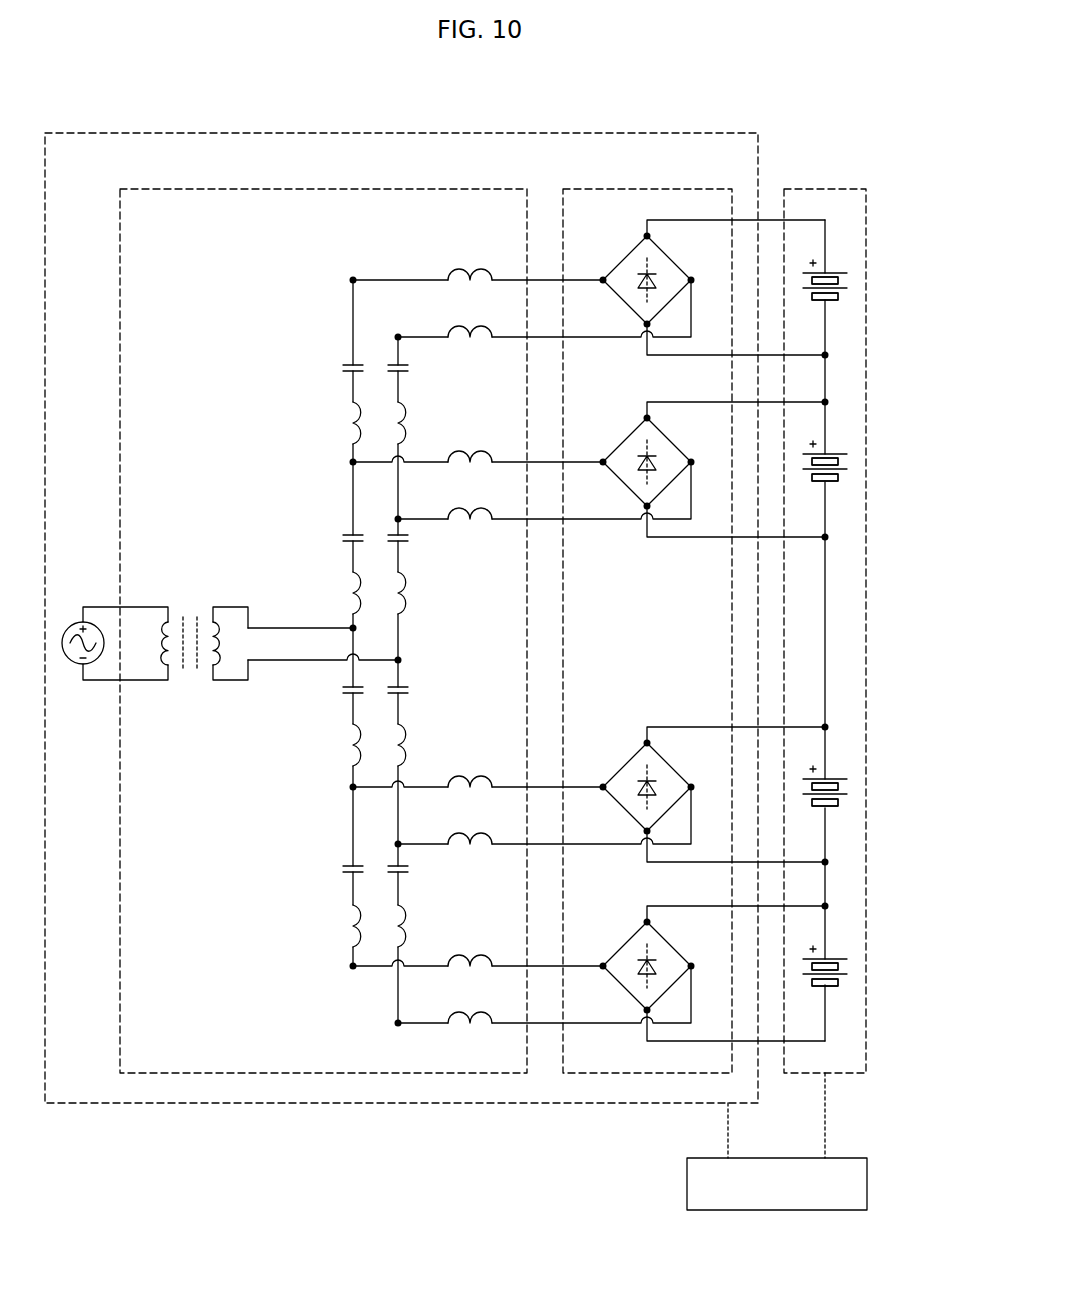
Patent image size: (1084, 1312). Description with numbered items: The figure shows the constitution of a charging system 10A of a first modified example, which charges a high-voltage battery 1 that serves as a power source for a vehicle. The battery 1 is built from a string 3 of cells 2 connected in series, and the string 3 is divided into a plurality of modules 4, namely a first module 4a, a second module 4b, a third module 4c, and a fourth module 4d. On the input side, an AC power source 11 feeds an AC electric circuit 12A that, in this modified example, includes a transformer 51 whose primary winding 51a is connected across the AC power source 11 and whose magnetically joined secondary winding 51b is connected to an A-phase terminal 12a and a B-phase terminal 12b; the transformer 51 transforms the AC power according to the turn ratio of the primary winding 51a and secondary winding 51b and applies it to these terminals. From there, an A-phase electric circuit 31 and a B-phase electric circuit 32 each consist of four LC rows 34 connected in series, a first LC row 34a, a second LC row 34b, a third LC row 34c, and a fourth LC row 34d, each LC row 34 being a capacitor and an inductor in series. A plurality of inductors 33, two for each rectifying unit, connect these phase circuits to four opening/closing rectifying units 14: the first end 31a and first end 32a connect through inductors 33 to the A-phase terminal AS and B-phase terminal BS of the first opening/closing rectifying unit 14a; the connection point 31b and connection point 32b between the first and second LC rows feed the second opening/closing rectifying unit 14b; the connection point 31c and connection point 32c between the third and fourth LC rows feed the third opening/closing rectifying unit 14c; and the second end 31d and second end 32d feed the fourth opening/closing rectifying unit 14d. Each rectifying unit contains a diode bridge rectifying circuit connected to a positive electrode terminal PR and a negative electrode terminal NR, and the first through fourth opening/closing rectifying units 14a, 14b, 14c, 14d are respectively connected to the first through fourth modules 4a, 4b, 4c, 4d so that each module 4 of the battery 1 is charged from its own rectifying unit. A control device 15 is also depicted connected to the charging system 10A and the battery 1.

The charging system 10A is at (759, 132).
The AC electric circuit 12A is at (455, 188).
The high-voltage battery 1 is at (839, 189).
The cell 2 is at (843, 273).
The string 3 is at (827, 607).
The module 4 is at (880, 603).
The first module 4a is at (827, 244).
The second module 4b is at (827, 437).
The third module 4c is at (827, 762).
The fourth module 4d is at (827, 933).
The AC power source 11 is at (70, 670).
The A-phase terminal 12a is at (353, 628).
The B-phase terminal 12b is at (398, 660).
The opening/closing rectifying unit 14 is at (658, 612).
The first opening/closing rectifying unit 14a is at (626, 249).
The second opening/closing rectifying unit 14b is at (626, 428).
The third opening/closing rectifying unit 14c is at (628, 753).
The fourth opening/closing rectifying unit 14d is at (626, 932).
The control device 15 is at (867, 1181).
The A-phase electric circuit 31 is at (352, 320).
The first end 31a is at (353, 280).
The connection point 31b is at (353, 462).
The connection point 31c is at (353, 787).
The second end 31d is at (353, 966).
The B-phase electric circuit 32 is at (392, 990).
The first end 32a is at (398, 337).
The connection point 32b is at (398, 519).
The connection point 32c is at (398, 844).
The second end 32d is at (398, 1023).
The inductor 33 is at (492, 337).
The LC row 34 is at (285, 656).
The first LC row 34a is at (397, 397).
The second LC row 34b is at (396, 561).
The third LC row 34c is at (397, 723).
The fourth LC row 34d is at (397, 901).
The transformer 51 is at (188, 590).
The primary winding 51a is at (157, 607).
The secondary winding 51b is at (223, 607).
The A-phase terminal AS is at (603, 280).
The B-phase terminal BS is at (691, 280).
The positive electrode terminal PR is at (647, 237).
The negative electrode terminal NR is at (647, 324).